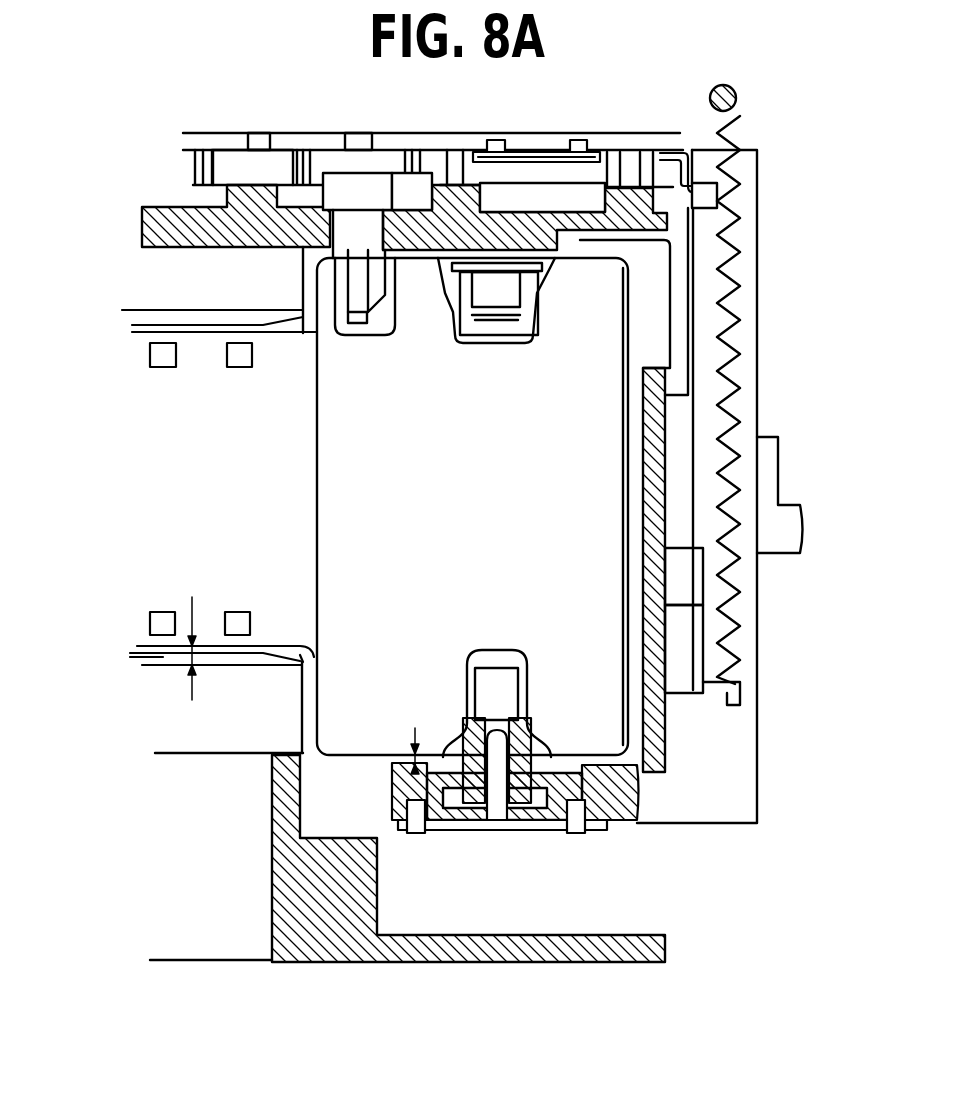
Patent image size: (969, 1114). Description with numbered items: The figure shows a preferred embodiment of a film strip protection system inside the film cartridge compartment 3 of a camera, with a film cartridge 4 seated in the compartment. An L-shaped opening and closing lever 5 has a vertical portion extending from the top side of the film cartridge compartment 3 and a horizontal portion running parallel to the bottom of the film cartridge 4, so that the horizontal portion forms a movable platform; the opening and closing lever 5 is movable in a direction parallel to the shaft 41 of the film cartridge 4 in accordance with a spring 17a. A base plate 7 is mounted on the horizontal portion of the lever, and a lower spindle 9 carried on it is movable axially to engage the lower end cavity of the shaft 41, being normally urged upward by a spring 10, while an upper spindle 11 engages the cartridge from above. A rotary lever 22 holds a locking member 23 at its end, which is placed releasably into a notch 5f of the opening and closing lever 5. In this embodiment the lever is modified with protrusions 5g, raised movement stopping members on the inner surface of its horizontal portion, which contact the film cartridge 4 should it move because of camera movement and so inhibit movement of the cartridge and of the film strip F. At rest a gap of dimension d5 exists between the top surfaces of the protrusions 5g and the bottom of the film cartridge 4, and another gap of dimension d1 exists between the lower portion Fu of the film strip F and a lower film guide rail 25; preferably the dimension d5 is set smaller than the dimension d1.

The film cartridge compartment 3 is at (638, 412).
The film cartridge 4 is at (375, 460).
The opening and closing lever 5 is at (738, 767).
The notch 5f is at (703, 210).
The protrusions 5g is at (390, 763).
The base plate 7 is at (457, 830).
The lower spindle 9 is at (515, 807).
The spring 10 is at (480, 830).
The upper spindle 11 is at (507, 292).
The spring 17a is at (737, 298).
The rotary lever 22 is at (610, 163).
The locking member 23 is at (685, 183).
The lower film guide rail 25 is at (160, 660).
The shaft 41 is at (528, 342).
The film strip F is at (200, 362).
The lower portion of film strip Fu is at (303, 656).
The dimension d1 is at (179, 632).
The dimension d5 is at (399, 740).